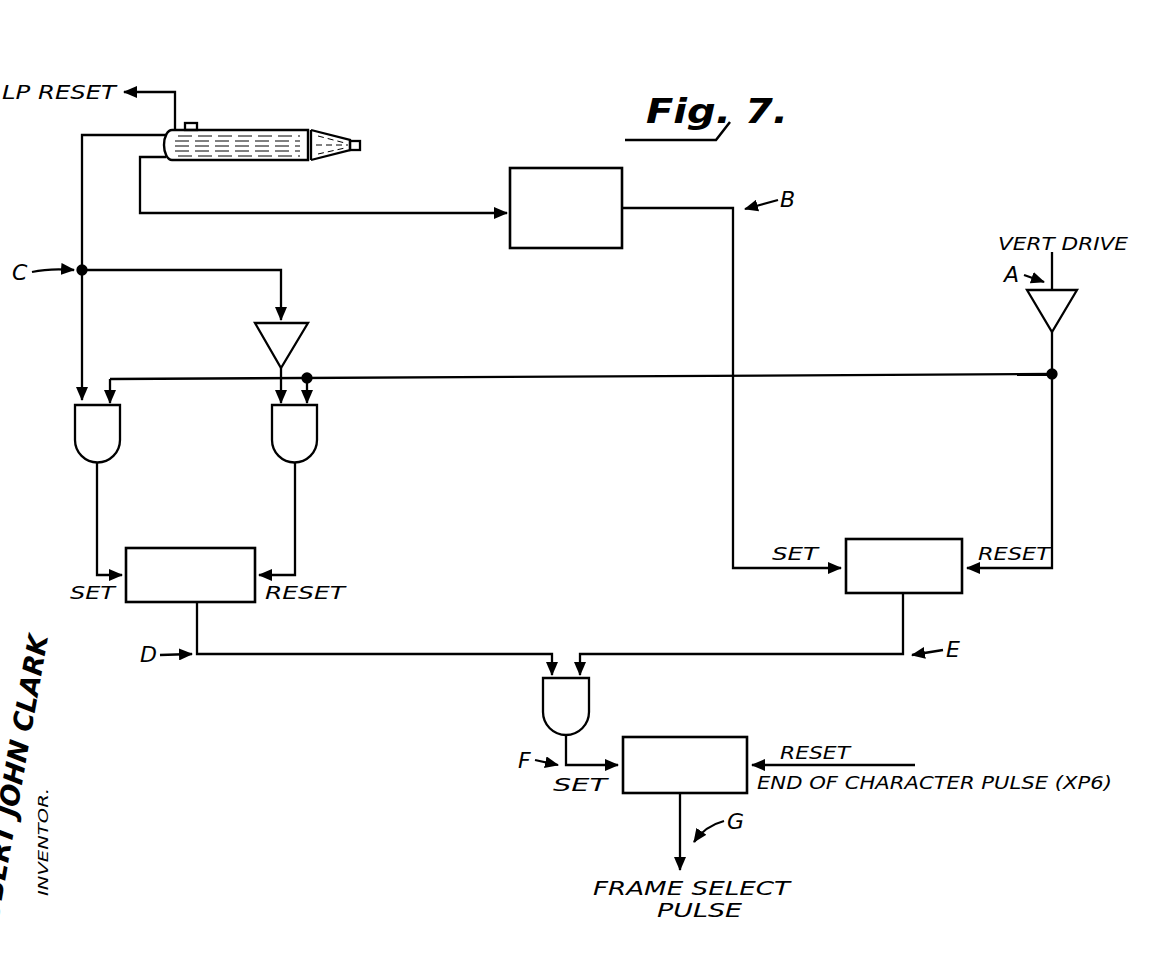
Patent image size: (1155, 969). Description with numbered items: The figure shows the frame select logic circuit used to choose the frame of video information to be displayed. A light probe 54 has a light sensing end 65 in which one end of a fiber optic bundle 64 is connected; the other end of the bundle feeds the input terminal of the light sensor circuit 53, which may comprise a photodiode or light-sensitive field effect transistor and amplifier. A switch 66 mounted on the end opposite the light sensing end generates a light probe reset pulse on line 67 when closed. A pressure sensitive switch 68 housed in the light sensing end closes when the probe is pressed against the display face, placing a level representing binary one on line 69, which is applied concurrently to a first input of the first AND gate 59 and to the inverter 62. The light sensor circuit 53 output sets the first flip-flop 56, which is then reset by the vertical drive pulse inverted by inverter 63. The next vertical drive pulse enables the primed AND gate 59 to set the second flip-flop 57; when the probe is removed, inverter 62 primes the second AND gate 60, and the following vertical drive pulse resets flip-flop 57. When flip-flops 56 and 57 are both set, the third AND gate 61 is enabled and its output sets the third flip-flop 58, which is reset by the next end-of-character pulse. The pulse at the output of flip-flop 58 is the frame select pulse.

The light sensor circuit 53 is at (562, 166).
The light probe 54 is at (272, 130).
The first flip-flop 56 is at (916, 539).
The second flip-flop 57 is at (221, 548).
The third flip-flop 58 is at (703, 737).
The first AND gate 59 is at (122, 442).
The second AND gate 60 is at (319, 436).
The third AND gate 61 is at (543, 702).
The inverter 62 is at (300, 322).
The inverter 63 is at (1067, 312).
The fiber optic bundle 64 is at (470, 206).
The light sensing end 65 is at (361, 142).
The switch 66 is at (197, 123).
The line 67 is at (153, 86).
The pressure sensitive switch 68 is at (336, 130).
The line 69 is at (82, 196).